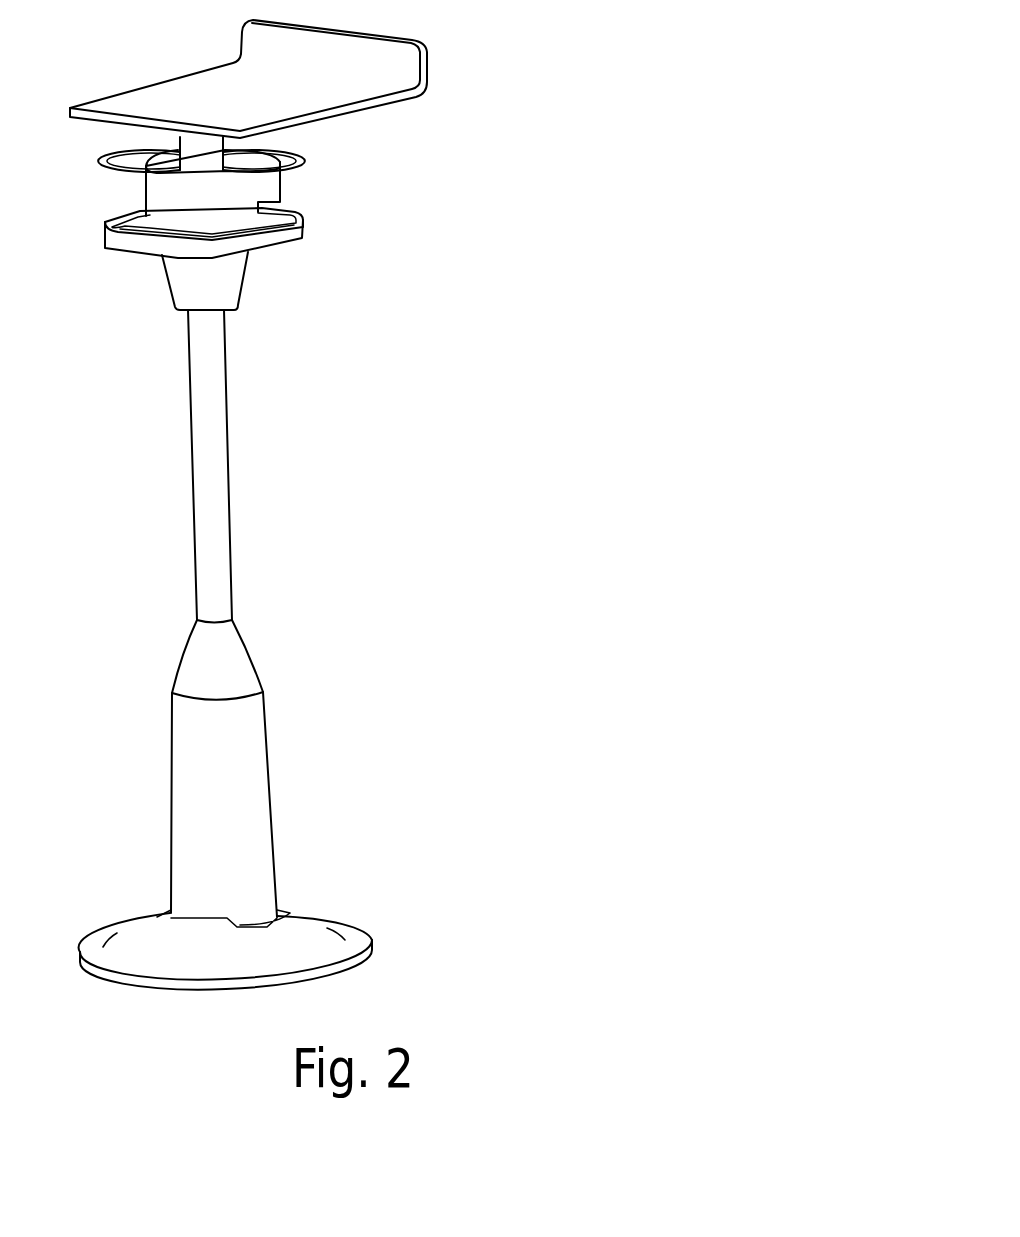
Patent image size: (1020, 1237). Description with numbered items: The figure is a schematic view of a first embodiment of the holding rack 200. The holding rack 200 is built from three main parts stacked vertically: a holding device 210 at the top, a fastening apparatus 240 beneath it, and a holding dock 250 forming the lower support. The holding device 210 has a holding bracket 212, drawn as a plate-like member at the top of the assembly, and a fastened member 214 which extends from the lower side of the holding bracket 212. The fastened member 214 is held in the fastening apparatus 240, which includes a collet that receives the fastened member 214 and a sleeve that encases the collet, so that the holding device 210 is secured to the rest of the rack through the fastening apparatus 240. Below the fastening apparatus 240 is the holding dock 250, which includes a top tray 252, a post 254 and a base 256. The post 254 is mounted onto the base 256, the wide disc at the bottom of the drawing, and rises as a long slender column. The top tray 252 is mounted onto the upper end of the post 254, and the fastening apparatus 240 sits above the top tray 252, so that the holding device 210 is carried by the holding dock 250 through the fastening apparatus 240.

The holding rack 200 is at (650, 920).
The holding device 210 is at (627, 2).
The holding bracket 212 is at (375, 63).
The fastened member 214 is at (208, 155).
The fastening apparatus 240 is at (212, 198).
The holding dock 250 is at (623, 305).
The top tray 252 is at (247, 242).
The post 254 is at (210, 466).
The base 256 is at (293, 945).